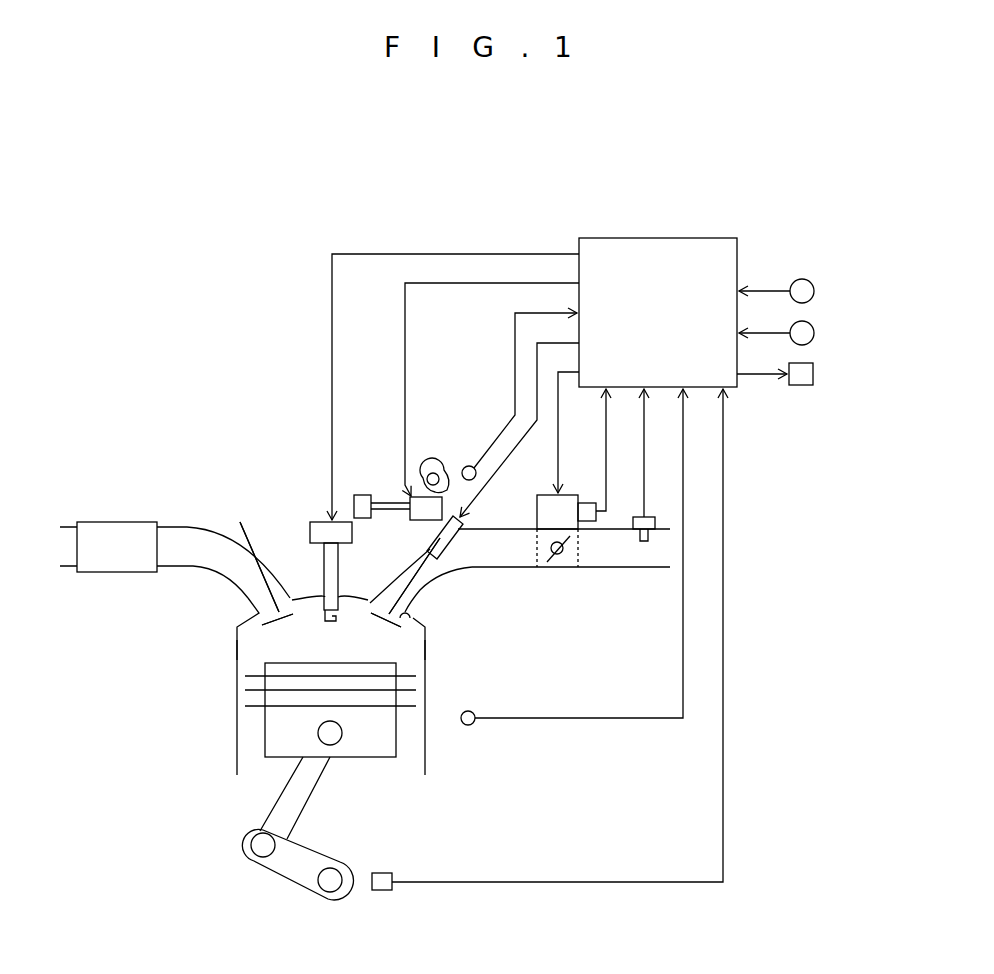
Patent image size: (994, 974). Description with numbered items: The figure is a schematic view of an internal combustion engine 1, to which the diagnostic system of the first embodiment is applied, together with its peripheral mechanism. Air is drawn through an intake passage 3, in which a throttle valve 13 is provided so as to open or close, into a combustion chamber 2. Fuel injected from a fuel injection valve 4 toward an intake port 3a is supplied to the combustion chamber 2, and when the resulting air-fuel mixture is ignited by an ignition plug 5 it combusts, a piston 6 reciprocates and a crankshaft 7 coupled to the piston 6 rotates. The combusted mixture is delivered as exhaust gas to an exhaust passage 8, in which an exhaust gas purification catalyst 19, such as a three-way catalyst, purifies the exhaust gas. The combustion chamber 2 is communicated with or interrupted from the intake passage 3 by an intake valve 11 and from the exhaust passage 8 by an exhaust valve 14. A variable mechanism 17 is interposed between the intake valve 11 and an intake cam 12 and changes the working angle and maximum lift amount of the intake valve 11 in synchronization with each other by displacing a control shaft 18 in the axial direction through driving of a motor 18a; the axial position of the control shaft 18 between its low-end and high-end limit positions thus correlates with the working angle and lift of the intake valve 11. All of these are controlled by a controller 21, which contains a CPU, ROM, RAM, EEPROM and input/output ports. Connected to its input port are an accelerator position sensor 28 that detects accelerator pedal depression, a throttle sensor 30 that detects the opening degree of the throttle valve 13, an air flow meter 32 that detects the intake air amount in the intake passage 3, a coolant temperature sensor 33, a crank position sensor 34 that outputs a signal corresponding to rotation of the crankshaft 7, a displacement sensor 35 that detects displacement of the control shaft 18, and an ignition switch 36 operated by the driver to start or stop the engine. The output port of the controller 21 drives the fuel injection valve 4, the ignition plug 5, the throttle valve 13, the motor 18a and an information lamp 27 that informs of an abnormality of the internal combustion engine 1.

The internal combustion engine 1 is at (205, 697).
The combustion chamber 2 is at (257, 642).
The intake passage 3 is at (490, 560).
The intake port 3a is at (411, 619).
The fuel injection valve 4 is at (453, 531).
The ignition plug 5 is at (322, 568).
The piston 6 is at (369, 752).
The crankshaft 7 is at (337, 876).
The exhaust passage 8 is at (181, 562).
The intake valve 11 is at (400, 603).
The intake cam 12 is at (432, 463).
The throttle valve 13 is at (556, 562).
The exhaust valve 14 is at (250, 596).
The variable mechanism 17 is at (404, 515).
The control shaft 18 is at (388, 503).
The motor 18a is at (360, 495).
The exhaust gas purification catalyst 19 is at (122, 522).
The controller 21 is at (686, 238).
The information lamp 27 is at (813, 374).
The accelerator position sensor 28 is at (814, 291).
The throttle sensor 30 is at (595, 503).
The air flow meter 32 is at (650, 516).
The coolant temperature sensor 33 is at (467, 710).
The crank position sensor 34 is at (386, 872).
The displacement sensor 35 is at (471, 465).
The ignition switch 36 is at (814, 333).